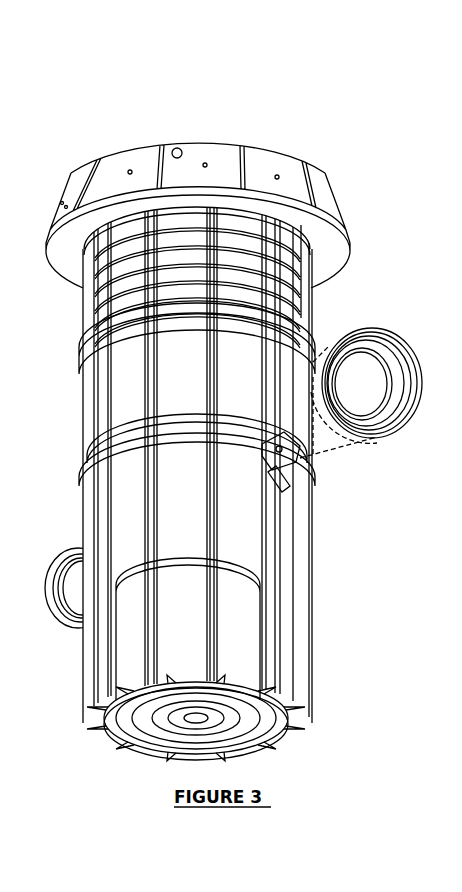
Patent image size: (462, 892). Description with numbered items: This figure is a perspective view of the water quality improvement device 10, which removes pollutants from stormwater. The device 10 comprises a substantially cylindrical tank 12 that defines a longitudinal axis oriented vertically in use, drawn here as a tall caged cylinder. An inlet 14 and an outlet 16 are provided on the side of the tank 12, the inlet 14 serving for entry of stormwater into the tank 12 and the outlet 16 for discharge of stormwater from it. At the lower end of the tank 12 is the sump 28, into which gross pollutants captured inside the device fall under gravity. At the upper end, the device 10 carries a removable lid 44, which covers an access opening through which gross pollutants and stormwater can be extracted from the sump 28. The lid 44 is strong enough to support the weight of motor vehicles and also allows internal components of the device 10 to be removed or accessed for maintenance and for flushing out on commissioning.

The water quality improvement device 10 is at (67, 130).
The tank 12 is at (247, 520).
The inlet 14 is at (368, 388).
The outlet 16 is at (62, 608).
The sump 28 is at (207, 717).
The removable lid 44 is at (268, 162).